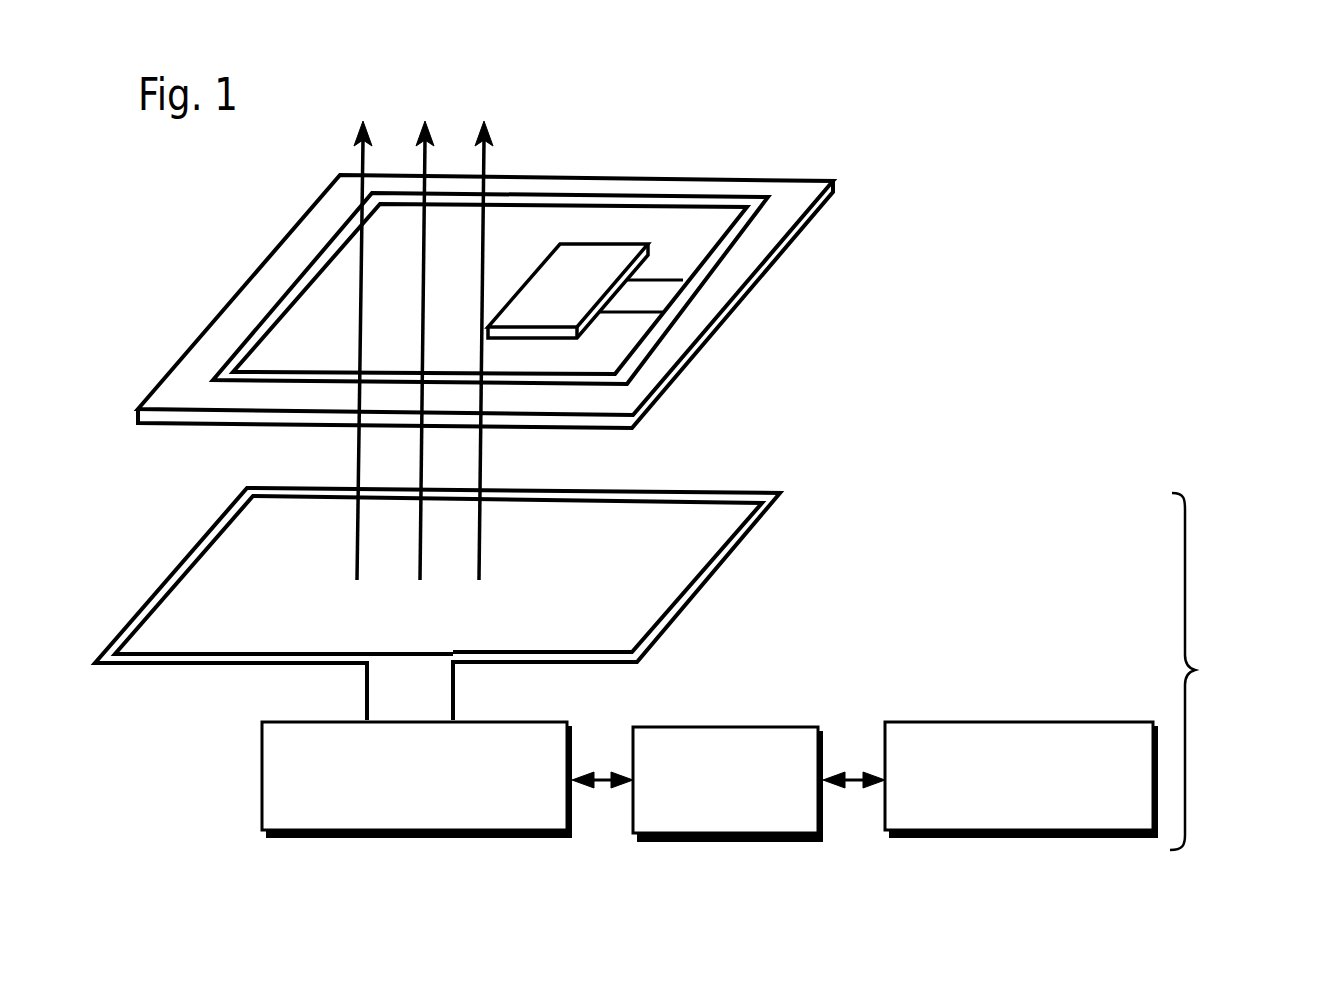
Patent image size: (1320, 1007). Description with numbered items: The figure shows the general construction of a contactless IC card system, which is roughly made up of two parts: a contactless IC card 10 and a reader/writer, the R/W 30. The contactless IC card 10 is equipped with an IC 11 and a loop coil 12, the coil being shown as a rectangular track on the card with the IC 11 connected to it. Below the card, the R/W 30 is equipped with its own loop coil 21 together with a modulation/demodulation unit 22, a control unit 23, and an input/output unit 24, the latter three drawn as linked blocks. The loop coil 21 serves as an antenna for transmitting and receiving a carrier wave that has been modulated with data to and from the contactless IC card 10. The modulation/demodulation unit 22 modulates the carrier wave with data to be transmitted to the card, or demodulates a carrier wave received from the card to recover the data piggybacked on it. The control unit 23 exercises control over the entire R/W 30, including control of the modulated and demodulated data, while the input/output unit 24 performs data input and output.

The contactless IC card 10 is at (673, 180).
The IC 11 is at (640, 243).
The loop coil 12 is at (650, 350).
The loop coil 21 is at (184, 665).
The modulation/demodulation unit 22 is at (393, 838).
The control unit 23 is at (718, 842).
The input/output unit 24 is at (1020, 838).
The R/W 30 is at (1238, 671).